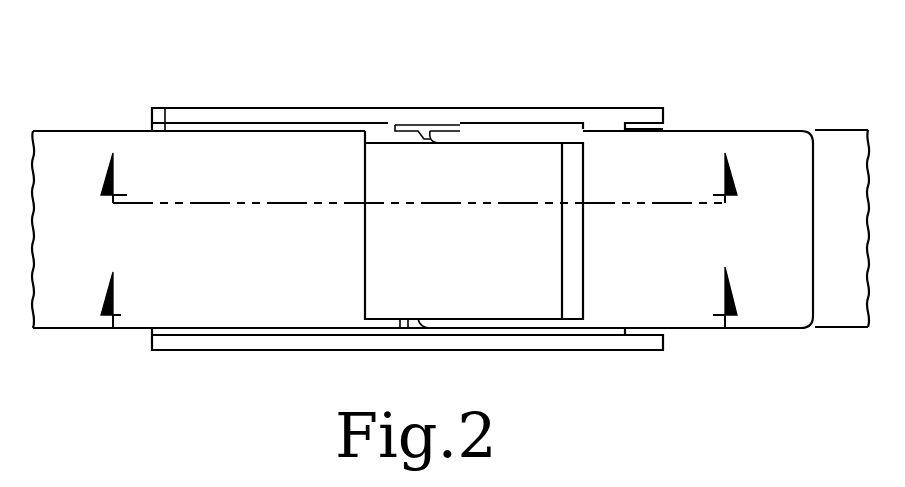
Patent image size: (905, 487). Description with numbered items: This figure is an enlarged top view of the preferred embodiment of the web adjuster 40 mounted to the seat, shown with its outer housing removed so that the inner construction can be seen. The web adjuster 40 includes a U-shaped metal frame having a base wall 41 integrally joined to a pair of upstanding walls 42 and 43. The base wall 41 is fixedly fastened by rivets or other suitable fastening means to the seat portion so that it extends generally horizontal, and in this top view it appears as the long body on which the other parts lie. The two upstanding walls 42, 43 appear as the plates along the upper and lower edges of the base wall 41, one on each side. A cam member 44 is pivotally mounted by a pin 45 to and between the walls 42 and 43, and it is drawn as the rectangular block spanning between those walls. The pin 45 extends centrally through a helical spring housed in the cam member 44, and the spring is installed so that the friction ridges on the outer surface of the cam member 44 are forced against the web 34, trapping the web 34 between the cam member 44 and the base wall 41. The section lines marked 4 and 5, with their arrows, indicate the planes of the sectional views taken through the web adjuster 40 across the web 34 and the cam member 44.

The web 34 is at (68, 316).
The web adjuster 40 is at (519, 68).
The base wall 41 is at (158, 108).
The upstanding wall 42 is at (198, 108).
The upstanding wall 43 is at (252, 340).
The cam member 44 is at (377, 152).
The pin 45 is at (408, 324).
The section line 4 is at (418, 297).
The section line 5 is at (417, 178).